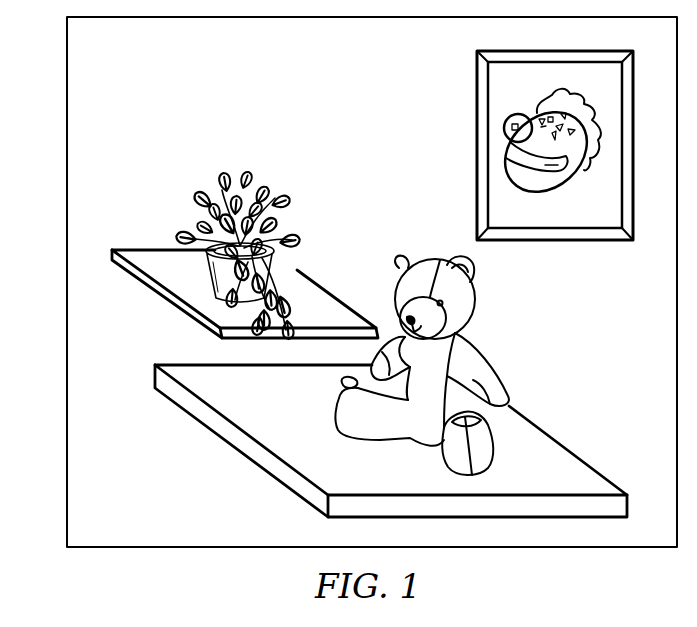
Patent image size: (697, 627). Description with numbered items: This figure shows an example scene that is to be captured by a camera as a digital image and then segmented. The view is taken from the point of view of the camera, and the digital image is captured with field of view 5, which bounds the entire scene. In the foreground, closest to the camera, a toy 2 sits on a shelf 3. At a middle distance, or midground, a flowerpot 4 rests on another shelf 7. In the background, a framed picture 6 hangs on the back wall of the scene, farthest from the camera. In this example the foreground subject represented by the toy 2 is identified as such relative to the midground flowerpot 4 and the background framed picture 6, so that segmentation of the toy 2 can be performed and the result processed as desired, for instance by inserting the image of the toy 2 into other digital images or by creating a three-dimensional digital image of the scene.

The toy 2 is at (490, 357).
The shelf 3 is at (541, 430).
The flowerpot 4 is at (207, 194).
The field of view 5 is at (58, 121).
The framed picture 6 is at (477, 145).
The shelf 7 is at (150, 289).